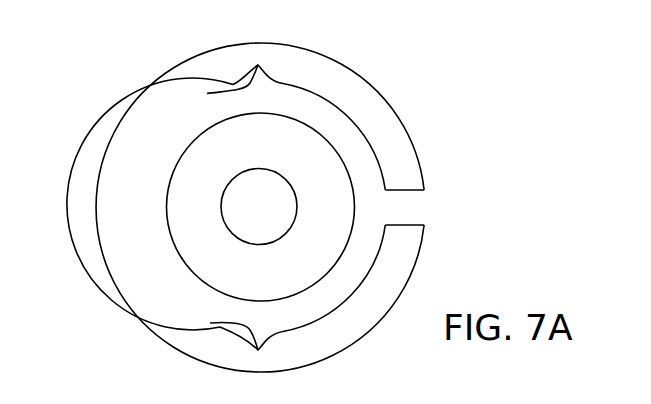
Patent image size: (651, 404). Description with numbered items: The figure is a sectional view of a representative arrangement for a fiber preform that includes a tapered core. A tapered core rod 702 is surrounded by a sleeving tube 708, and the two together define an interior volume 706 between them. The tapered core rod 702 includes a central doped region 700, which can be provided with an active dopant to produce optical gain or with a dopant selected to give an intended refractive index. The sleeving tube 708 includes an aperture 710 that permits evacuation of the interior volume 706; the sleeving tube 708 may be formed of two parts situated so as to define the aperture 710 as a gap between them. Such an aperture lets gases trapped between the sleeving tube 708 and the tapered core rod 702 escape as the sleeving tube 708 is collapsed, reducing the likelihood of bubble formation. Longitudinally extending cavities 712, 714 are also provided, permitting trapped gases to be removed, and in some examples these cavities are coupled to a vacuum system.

The central doped region 700 is at (247, 197).
The tapered core rod 702 is at (253, 276).
The interior volume 706 is at (337, 128).
The sleeving tube 708 is at (318, 72).
The aperture 710 is at (405, 207).
The cavity 712 is at (212, 324).
The cavity 714 is at (207, 93).